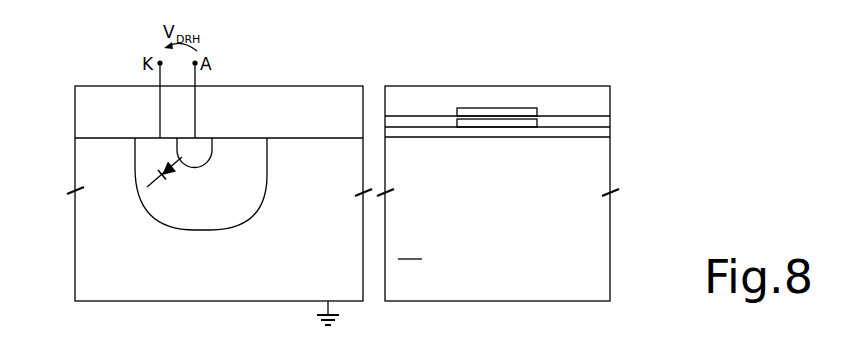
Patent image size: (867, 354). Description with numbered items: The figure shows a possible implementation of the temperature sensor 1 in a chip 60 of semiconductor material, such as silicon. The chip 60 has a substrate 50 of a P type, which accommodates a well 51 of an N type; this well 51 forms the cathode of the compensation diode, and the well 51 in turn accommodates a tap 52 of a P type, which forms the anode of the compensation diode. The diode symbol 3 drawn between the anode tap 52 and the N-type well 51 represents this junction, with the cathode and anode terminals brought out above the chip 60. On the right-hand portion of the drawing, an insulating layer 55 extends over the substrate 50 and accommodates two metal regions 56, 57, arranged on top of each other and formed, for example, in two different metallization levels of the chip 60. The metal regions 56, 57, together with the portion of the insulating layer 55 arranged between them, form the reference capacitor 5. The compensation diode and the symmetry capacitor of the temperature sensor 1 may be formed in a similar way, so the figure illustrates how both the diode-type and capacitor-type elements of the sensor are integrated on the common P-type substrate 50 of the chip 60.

The temperature sensor 1 is at (676, 138).
The diode 3 is at (160, 172).
The reference capacitor 5 is at (488, 81).
The substrate 50 is at (112, 259).
The well 51 is at (232, 220).
The tap 52 is at (209, 155).
The insulating layer 55 is at (597, 96).
The metal region 56 is at (497, 108).
The metal region 57 is at (520, 124).
The chip 60 is at (68, 136).